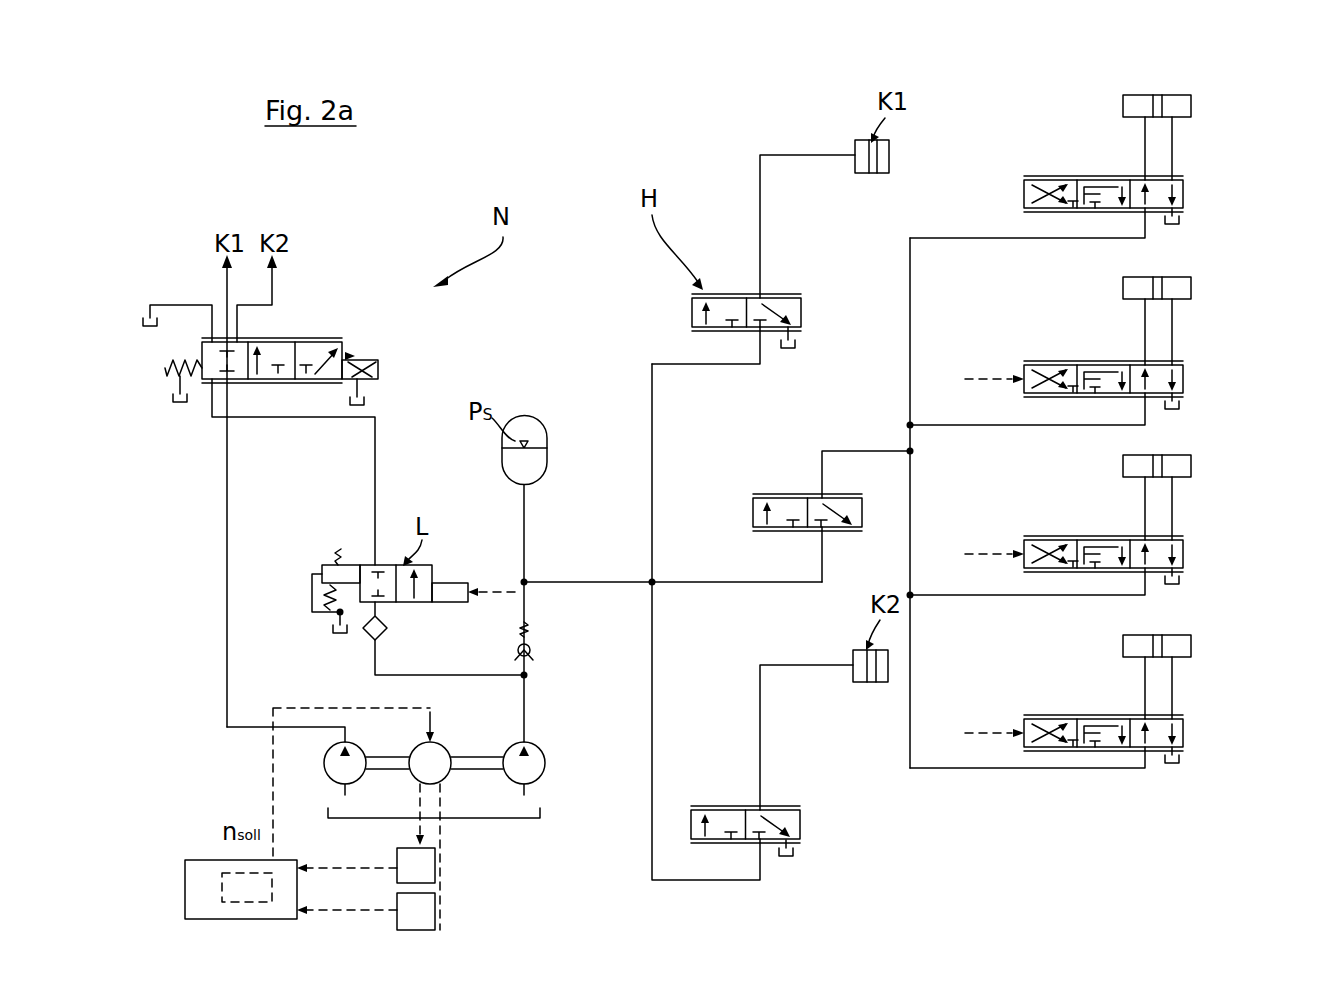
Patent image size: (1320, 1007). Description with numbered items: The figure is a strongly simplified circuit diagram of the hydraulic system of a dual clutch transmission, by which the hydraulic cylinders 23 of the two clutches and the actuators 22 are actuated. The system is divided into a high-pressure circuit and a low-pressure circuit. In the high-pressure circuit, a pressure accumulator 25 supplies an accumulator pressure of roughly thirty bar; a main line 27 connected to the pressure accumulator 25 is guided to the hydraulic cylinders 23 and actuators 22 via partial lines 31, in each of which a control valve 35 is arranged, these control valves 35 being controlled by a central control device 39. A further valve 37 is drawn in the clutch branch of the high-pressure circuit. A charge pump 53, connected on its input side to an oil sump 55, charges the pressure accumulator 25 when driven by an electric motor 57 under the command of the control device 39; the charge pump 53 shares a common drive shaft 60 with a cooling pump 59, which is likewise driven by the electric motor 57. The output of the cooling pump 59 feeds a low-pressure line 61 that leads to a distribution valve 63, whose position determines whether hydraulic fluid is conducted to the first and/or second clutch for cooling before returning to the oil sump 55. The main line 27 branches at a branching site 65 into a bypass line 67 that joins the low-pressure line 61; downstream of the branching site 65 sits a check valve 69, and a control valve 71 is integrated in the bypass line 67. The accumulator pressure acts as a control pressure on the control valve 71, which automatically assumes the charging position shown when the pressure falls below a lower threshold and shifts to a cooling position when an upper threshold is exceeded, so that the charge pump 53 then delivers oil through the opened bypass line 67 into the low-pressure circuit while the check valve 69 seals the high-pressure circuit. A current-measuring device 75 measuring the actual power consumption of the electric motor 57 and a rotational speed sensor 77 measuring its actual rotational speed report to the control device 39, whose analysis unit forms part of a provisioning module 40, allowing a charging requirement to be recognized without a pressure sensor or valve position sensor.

The actuator 22 is at (1203, 104).
The hydraulic cylinder 23 is at (868, 174).
The pressure accumulator 25 is at (527, 415).
The main line 27 is at (524, 515).
The partial line 31 is at (653, 443).
The control valve 35 is at (790, 497).
The clutch valve 37 is at (781, 297).
The control device 39 is at (186, 862).
The provisioning module 40 is at (215, 887).
The charge pump 53 is at (546, 758).
The oil sump 55 is at (540, 818).
The electric motor 57 is at (446, 745).
The cooling pump 59 is at (324, 760).
The drive shaft 60 is at (484, 770).
The low-pressure line 61 is at (229, 551).
The distribution valve 63 is at (302, 342).
The branching site 65 is at (526, 676).
The bypass line 67 is at (478, 675).
The check valve 69 is at (540, 633).
The control valve 71 is at (420, 602).
The current-measuring device 75 is at (440, 866).
The rotational speed sensor 77 is at (440, 921).